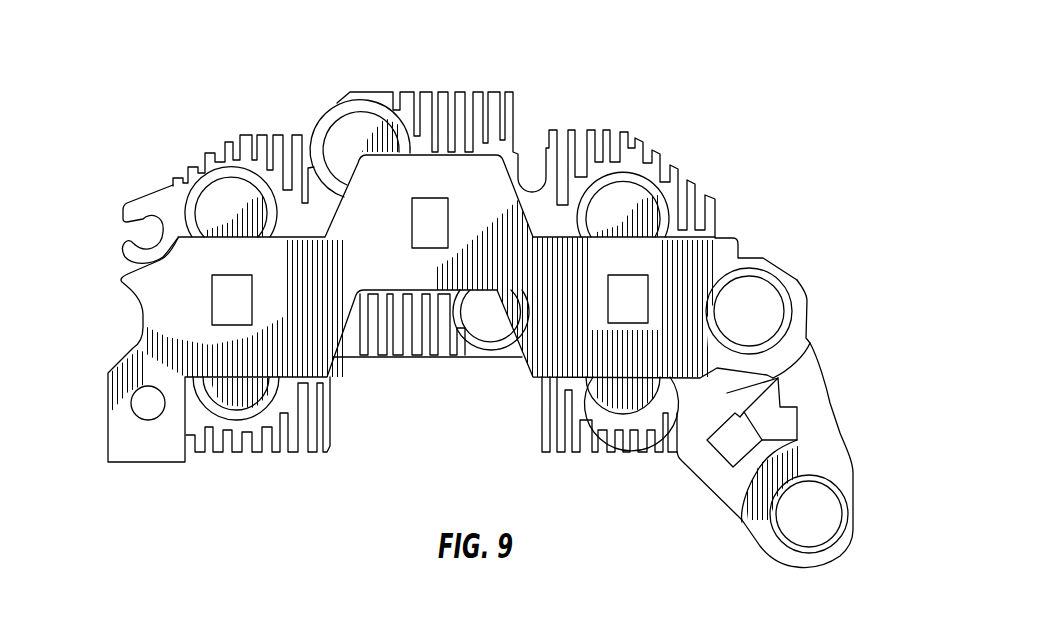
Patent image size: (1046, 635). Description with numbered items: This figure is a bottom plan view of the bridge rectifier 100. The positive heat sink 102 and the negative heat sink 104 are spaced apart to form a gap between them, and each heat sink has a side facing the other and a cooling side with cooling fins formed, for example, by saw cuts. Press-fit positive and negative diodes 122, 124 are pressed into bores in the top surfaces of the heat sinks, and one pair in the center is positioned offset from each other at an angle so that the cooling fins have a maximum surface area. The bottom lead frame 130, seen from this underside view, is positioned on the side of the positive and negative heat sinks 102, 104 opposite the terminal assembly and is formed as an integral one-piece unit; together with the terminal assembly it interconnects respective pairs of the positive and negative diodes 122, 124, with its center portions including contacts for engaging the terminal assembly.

The bridge rectifier 100 is at (455, 67).
The positive heat sink 102 is at (776, 376).
The negative heat sink 104 is at (313, 158).
The positive diode 122 is at (233, 407).
The negative diode 124 is at (622, 200).
The bottom lead frame 130 is at (133, 348).